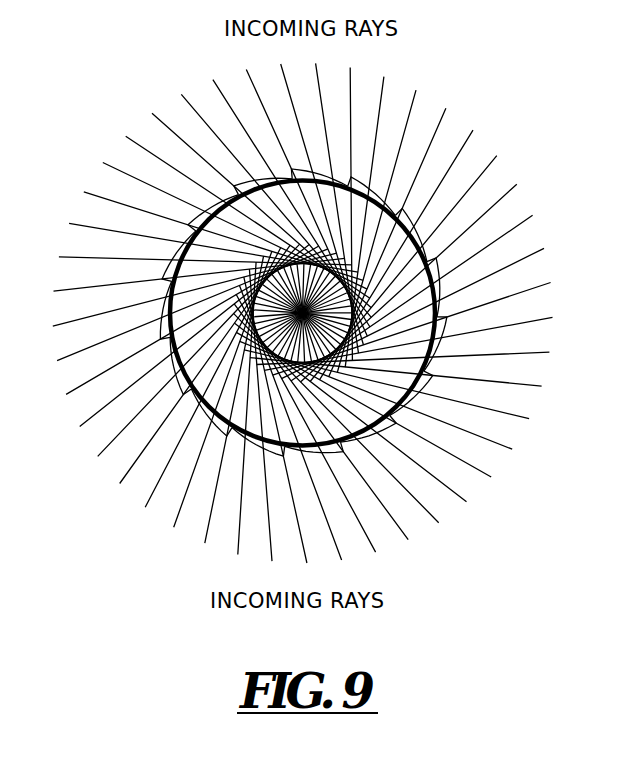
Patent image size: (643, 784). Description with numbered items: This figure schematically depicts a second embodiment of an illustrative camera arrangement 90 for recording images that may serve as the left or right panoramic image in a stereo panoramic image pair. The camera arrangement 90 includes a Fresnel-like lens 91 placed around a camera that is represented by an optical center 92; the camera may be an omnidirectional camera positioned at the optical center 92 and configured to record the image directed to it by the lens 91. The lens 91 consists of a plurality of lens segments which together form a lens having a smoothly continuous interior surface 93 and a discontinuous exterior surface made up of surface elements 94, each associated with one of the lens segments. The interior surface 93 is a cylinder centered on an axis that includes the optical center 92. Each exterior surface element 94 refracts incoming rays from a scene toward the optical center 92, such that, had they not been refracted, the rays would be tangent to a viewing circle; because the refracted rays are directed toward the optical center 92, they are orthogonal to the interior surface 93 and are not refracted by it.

The camera arrangement 90 is at (90, 92).
The Fresnel-like lens 91 is at (360, 175).
The optical center 92 is at (442, 347).
The interior surface 93 is at (415, 505).
The exterior surface elements 94 is at (168, 302).